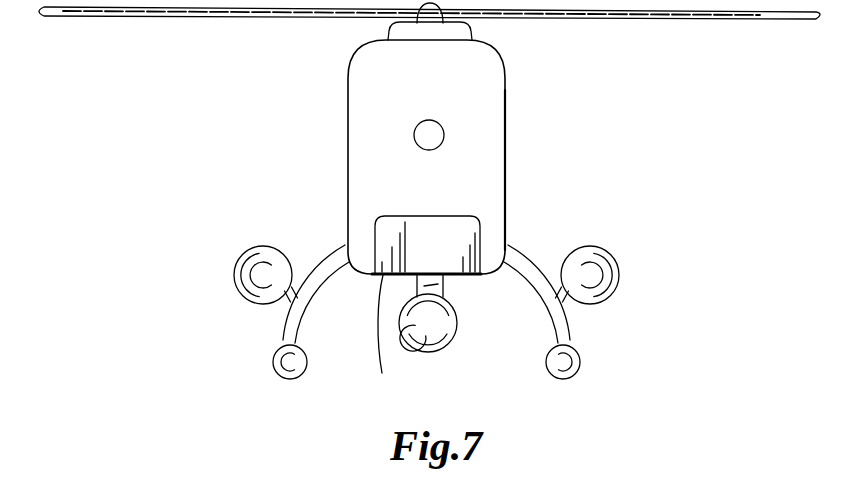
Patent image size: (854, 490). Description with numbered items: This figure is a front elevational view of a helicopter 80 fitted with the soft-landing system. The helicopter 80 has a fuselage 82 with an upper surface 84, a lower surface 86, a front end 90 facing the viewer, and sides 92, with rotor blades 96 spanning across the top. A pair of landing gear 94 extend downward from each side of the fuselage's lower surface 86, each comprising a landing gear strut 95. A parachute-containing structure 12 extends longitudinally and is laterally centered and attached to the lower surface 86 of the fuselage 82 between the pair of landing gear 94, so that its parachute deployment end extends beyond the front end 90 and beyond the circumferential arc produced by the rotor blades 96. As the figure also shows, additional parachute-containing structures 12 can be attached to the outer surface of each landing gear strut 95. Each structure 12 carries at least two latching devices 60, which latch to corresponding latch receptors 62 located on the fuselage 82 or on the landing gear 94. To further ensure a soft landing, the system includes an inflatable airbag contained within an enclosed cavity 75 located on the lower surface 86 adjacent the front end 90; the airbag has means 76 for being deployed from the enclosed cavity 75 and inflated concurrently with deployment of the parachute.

The parachute-containing structure 12 is at (262, 256).
The latching device 60 is at (283, 304).
The latch receptor 62 is at (293, 305).
The enclosed cavity 75 is at (346, 229).
The airbag deployment means 76 is at (387, 238).
The helicopter 80 is at (423, 157).
The fuselage 82 is at (427, 157).
The upper surface 84 is at (487, 44).
The lower surface 86 is at (404, 345).
The front end 90 is at (433, 135).
The sides 92 is at (348, 112).
The landing gear 94 is at (287, 378).
The landing gear strut 95 is at (297, 318).
The rotor blades 96 is at (597, 16).